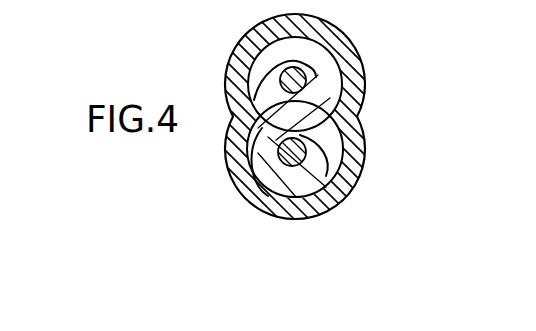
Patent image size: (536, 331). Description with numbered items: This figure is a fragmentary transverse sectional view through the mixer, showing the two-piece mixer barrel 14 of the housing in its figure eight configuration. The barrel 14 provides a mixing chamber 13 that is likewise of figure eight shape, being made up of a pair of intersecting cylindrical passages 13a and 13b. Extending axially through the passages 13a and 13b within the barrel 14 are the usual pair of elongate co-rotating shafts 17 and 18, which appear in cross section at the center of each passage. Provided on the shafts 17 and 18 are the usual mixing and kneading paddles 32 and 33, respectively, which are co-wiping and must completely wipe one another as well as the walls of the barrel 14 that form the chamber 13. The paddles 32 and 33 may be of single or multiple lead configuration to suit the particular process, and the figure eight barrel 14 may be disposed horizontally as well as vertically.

The mixing chamber 13 is at (272, 55).
The cylindrical passage 13a is at (302, 46).
The cylindrical passage 13b is at (318, 188).
The mixer barrel 14 is at (356, 104).
The shaft 17 is at (262, 83).
The shaft 18 is at (250, 190).
The mixing and kneading paddle 32 is at (316, 82).
The mixing and kneading paddle 33 is at (316, 160).